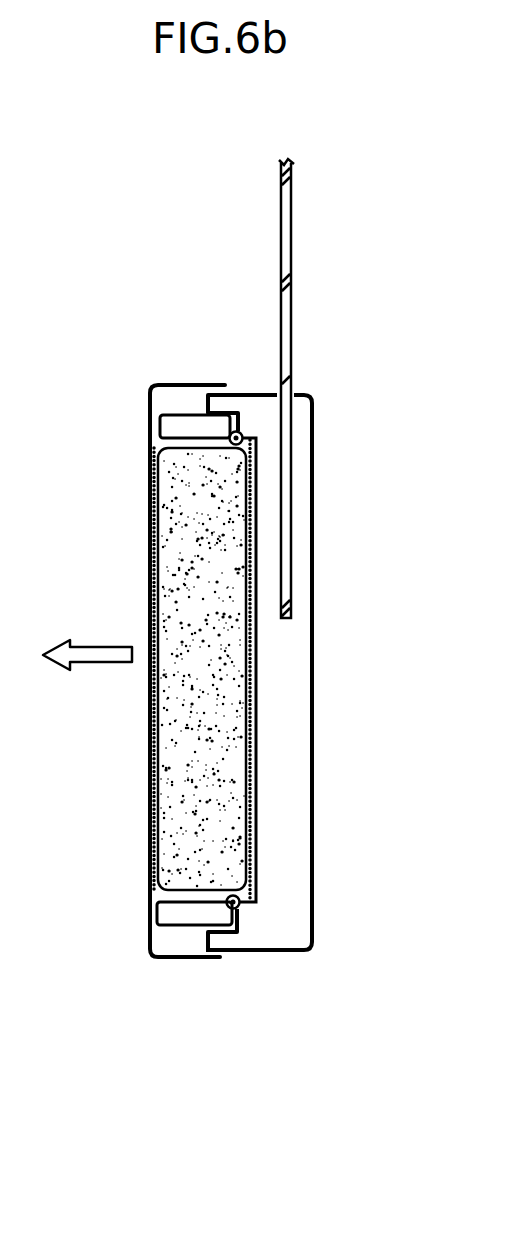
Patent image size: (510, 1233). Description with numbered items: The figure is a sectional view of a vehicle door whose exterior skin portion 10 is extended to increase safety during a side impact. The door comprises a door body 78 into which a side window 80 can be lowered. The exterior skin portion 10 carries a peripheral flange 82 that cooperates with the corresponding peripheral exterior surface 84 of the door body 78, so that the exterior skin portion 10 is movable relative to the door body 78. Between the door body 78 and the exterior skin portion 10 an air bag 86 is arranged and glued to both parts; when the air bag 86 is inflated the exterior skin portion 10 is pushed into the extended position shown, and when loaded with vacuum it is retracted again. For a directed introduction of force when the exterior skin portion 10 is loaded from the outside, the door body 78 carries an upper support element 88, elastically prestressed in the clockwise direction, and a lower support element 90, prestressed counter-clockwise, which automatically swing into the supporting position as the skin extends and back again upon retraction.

The exterior skin portion 10 is at (148, 775).
The door body 78 is at (312, 677).
The side window 80 is at (291, 210).
The peripheral flange 82 is at (200, 958).
The peripheral exterior surface 84 is at (243, 952).
The air bag 86 is at (190, 573).
The upper support element 88 is at (176, 424).
The lower support element 90 is at (168, 912).